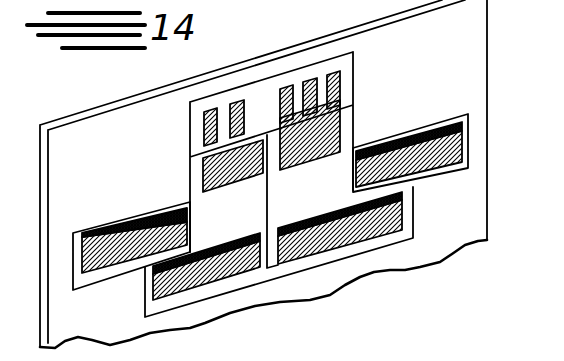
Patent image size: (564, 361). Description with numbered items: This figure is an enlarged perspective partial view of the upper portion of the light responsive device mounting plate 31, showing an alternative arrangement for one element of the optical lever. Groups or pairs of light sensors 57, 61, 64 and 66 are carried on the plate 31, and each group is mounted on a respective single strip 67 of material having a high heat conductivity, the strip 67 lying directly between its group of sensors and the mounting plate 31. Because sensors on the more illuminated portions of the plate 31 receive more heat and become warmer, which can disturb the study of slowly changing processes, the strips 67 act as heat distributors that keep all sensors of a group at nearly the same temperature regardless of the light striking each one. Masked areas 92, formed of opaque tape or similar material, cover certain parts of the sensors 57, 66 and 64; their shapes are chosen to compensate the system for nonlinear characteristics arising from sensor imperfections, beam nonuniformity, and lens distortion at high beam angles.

The mounting plate 31 is at (473, 192).
The light sensors 57 is at (258, 136).
The light sensors 61 is at (278, 140).
The light sensors 64 is at (310, 240).
The light sensors 66 is at (433, 123).
The strip of high heat conductivity material 67 is at (352, 100).
The masked areas 92 is at (318, 212).